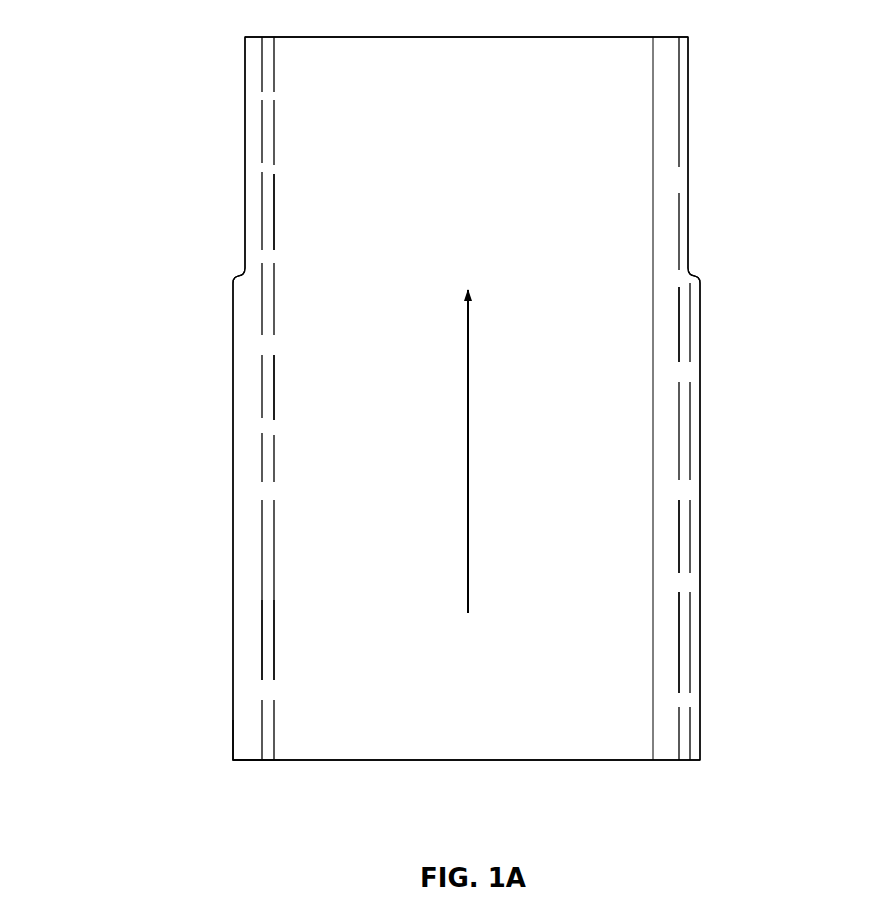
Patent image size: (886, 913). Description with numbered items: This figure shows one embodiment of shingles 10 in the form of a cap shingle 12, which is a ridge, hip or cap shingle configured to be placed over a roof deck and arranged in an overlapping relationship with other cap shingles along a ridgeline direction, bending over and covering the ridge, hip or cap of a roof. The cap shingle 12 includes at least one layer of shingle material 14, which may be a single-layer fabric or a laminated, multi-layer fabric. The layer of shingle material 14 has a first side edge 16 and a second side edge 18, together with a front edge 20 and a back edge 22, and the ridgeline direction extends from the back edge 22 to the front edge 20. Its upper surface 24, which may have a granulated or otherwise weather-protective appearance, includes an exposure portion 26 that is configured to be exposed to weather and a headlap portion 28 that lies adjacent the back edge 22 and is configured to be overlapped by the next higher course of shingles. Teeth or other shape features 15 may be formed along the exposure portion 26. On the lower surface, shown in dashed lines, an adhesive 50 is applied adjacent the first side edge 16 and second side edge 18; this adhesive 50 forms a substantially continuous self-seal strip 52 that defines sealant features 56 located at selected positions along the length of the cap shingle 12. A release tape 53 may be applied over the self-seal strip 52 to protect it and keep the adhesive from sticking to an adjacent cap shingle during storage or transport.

The shingles 10 is at (730, 135).
The cap shingle 12 is at (665, 90).
The layer of shingle material 14 is at (238, 242).
The teeth 15 is at (230, 737).
The first side edge 16 is at (233, 722).
The second side edge 18 is at (702, 448).
The front edge 20 is at (380, 762).
The back edge 22 is at (470, 36).
The upper surface 24 is at (426, 397).
The exposure portion 26 is at (288, 430).
The headlap portion 28 is at (340, 200).
The adhesive 50 is at (255, 580).
The self-seal strip 52 is at (282, 670).
The release tape 53 is at (248, 673).
The sealant features 56 is at (284, 391).